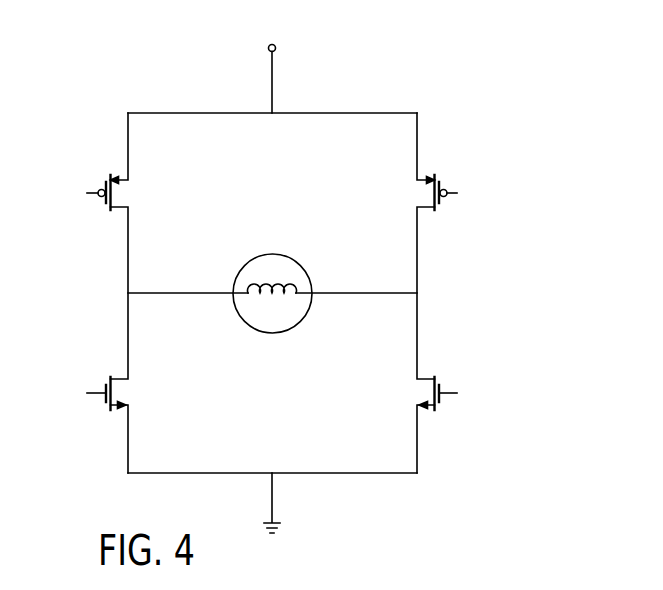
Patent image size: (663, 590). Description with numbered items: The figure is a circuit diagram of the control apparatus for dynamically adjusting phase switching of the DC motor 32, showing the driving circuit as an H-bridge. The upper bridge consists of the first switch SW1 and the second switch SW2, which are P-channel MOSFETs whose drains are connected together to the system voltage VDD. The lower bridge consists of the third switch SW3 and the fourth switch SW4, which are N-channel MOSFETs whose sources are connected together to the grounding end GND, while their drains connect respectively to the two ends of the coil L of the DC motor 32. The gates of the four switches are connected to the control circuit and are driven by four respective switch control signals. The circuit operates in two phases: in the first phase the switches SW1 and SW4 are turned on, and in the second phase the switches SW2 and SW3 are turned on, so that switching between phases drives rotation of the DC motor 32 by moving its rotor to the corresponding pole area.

The DC motor 32 is at (272, 254).
The first switch SW1 is at (113, 189).
The second switch SW2 is at (431, 189).
The third switch SW3 is at (113, 389).
The fourth switch SW4 is at (431, 389).
The system voltage VDD is at (272, 62).
The grounding end GND is at (272, 520).